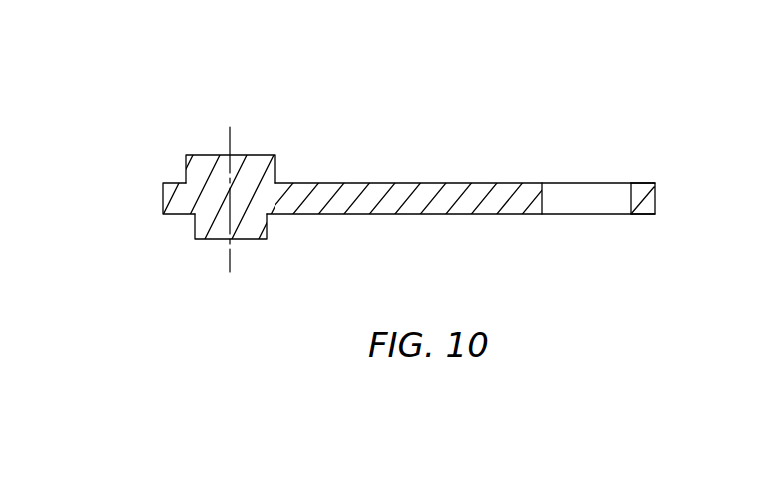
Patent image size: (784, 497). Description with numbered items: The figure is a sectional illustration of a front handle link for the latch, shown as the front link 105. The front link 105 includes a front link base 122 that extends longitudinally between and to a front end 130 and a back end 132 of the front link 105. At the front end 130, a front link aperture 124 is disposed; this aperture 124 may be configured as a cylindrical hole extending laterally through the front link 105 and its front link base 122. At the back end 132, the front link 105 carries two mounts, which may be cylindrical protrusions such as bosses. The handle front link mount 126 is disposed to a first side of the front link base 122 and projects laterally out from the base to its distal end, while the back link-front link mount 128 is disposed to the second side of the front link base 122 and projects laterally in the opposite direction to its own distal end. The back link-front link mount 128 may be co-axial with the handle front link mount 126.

The front link 105 is at (510, 84).
The front link base 122 is at (408, 183).
The front link aperture 124 is at (583, 198).
The handle front link mount 126 is at (248, 239).
The back link-front link mount 128 is at (262, 156).
The front end 130 is at (655, 198).
The back end 132 is at (163, 194).